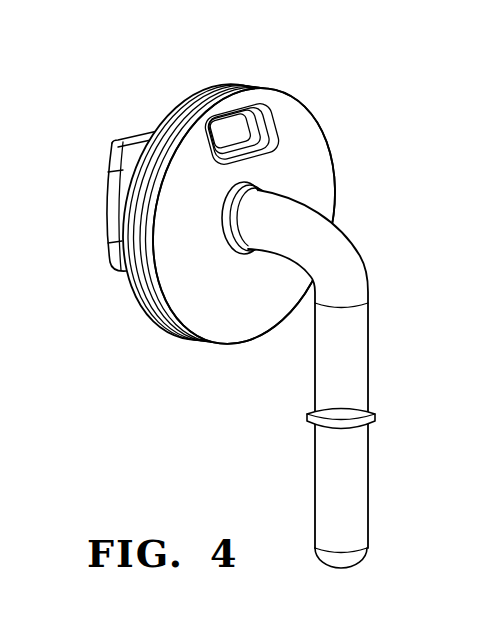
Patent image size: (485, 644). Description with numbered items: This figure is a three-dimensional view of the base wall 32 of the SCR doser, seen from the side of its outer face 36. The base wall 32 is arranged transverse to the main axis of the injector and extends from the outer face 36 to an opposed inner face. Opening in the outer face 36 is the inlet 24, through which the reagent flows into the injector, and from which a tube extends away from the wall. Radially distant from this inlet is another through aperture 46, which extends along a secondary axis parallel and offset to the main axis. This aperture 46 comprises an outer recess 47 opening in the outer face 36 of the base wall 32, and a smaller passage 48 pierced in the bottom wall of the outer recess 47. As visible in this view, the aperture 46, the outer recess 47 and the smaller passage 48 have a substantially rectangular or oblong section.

The inlet 24 is at (253, 226).
The base wall 32 is at (160, 100).
The outer face 36 is at (317, 175).
The through aperture 46 is at (315, 100).
The outer recess 47 is at (266, 126).
The smaller passage 48 is at (232, 120).